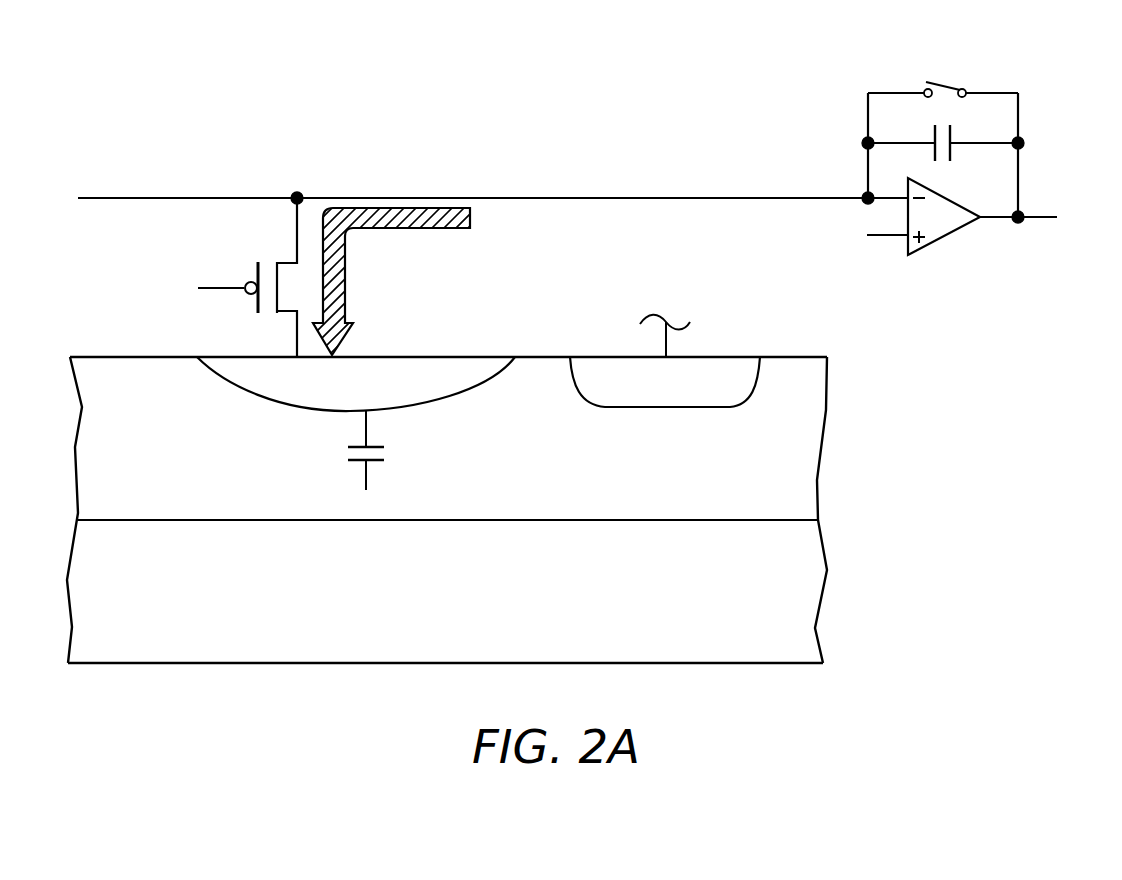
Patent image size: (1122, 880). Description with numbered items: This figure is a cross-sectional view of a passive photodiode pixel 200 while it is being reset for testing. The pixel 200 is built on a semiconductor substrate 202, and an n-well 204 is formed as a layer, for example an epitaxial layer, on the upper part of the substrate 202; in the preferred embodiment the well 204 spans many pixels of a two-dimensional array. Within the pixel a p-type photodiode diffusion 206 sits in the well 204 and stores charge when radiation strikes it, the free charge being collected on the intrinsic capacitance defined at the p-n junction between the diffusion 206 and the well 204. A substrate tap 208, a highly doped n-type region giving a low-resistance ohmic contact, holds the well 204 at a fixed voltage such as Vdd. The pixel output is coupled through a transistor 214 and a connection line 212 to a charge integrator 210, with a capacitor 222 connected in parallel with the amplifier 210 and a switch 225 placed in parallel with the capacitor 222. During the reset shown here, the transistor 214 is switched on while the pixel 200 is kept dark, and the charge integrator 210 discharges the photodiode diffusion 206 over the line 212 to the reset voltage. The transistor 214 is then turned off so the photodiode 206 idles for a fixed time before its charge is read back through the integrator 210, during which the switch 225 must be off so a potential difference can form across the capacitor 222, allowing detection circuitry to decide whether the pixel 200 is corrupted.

The pixel 200 is at (785, 103).
The semiconductor substrate 202 is at (470, 637).
The n-well 204 is at (620, 463).
The photodiode diffusion 206 is at (353, 367).
The substrate tap 208 is at (760, 386).
The charge integrator 210 is at (943, 227).
The connection line 212 is at (583, 198).
The transistor 214 is at (266, 253).
The capacitor 222 is at (957, 137).
The switch 225 is at (940, 78).